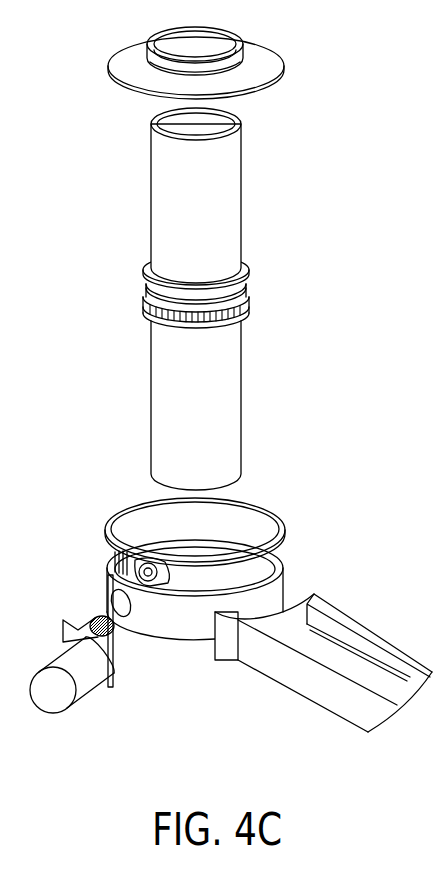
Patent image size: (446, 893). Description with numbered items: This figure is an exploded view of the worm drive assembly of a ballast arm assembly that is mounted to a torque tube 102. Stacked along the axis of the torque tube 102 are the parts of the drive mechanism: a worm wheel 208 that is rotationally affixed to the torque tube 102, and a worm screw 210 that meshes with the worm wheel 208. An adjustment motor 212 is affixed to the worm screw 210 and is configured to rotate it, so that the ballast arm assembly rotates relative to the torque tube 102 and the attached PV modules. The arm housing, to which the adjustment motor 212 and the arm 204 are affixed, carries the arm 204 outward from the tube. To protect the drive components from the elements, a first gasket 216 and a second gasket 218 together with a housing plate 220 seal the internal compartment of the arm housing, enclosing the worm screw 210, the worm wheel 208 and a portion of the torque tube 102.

The torque tube 102 is at (150, 218).
The arm 204 is at (376, 641).
The worm wheel 208 is at (248, 306).
The worm screw 210 is at (100, 620).
The adjustment motor 212 is at (70, 697).
The gasket 216 is at (108, 523).
The gasket 218 is at (150, 42).
The housing plate 220 is at (108, 70).